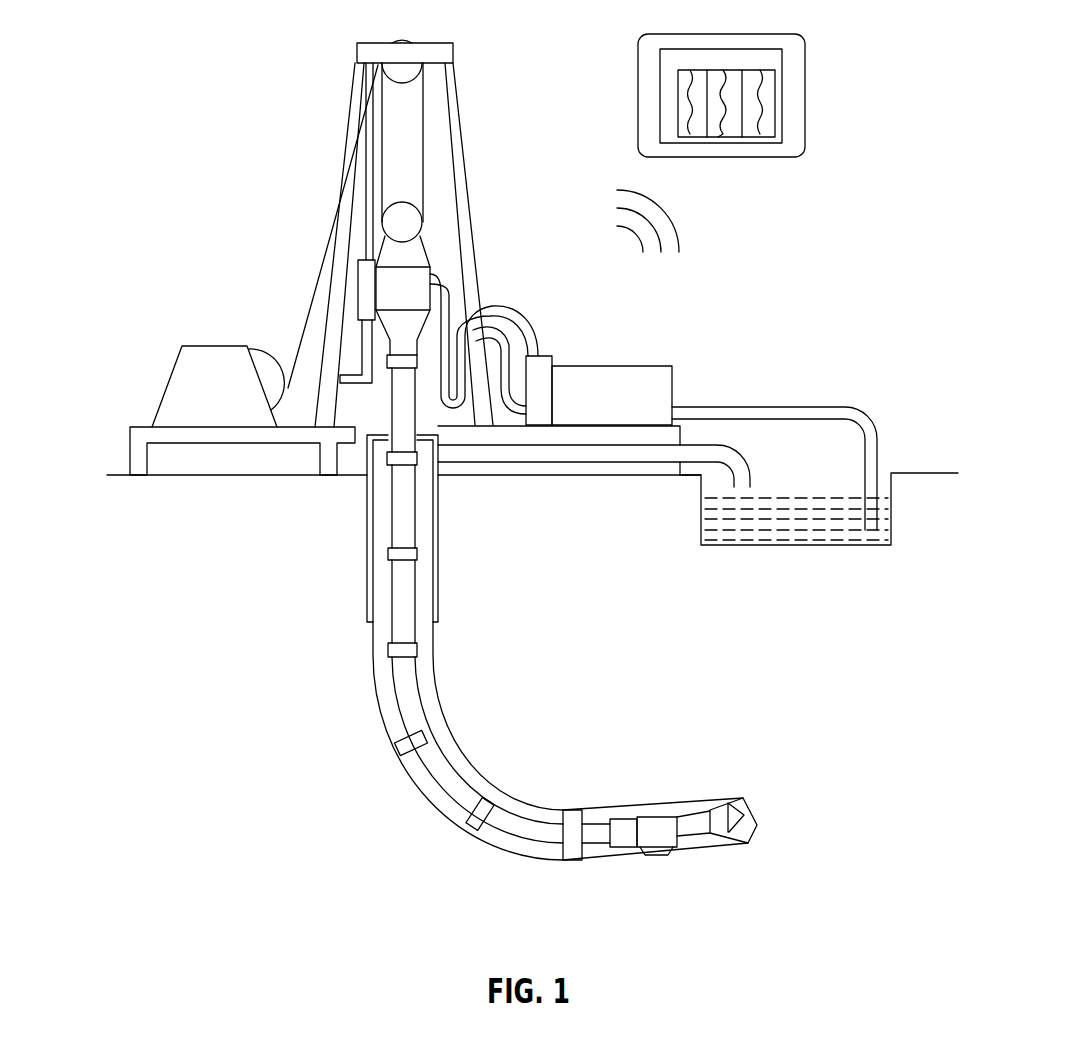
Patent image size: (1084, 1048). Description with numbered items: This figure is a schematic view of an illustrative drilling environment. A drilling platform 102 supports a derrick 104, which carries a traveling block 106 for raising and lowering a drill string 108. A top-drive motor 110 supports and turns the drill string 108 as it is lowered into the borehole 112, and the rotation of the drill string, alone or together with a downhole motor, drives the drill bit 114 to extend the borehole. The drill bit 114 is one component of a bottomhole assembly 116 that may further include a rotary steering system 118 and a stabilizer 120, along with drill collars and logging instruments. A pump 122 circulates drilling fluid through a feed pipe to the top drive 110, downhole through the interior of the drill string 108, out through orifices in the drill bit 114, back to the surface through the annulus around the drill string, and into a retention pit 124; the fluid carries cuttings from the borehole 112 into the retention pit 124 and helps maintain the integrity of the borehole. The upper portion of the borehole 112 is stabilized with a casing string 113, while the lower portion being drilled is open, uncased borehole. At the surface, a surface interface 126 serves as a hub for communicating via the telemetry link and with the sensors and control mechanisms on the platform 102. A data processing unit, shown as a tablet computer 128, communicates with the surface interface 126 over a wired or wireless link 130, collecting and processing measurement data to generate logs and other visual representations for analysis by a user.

The drilling platform 102 is at (128, 452).
The derrick 104 is at (358, 101).
The traveling block 106 is at (397, 222).
The drill string 108 is at (403, 578).
The top-drive motor 110 is at (385, 290).
The borehole 112 is at (380, 545).
The casing string 113 is at (370, 498).
The drill bit 114 is at (728, 812).
The bottomhole assembly 116 is at (598, 847).
The rotary steering system 118 is at (652, 856).
The stabilizer 120 is at (572, 810).
The pump 122 is at (672, 386).
The retention pit 124 is at (701, 512).
The surface interface 126 is at (548, 356).
The tablet computer 128 is at (638, 95).
The wired or wireless link 130 is at (657, 205).